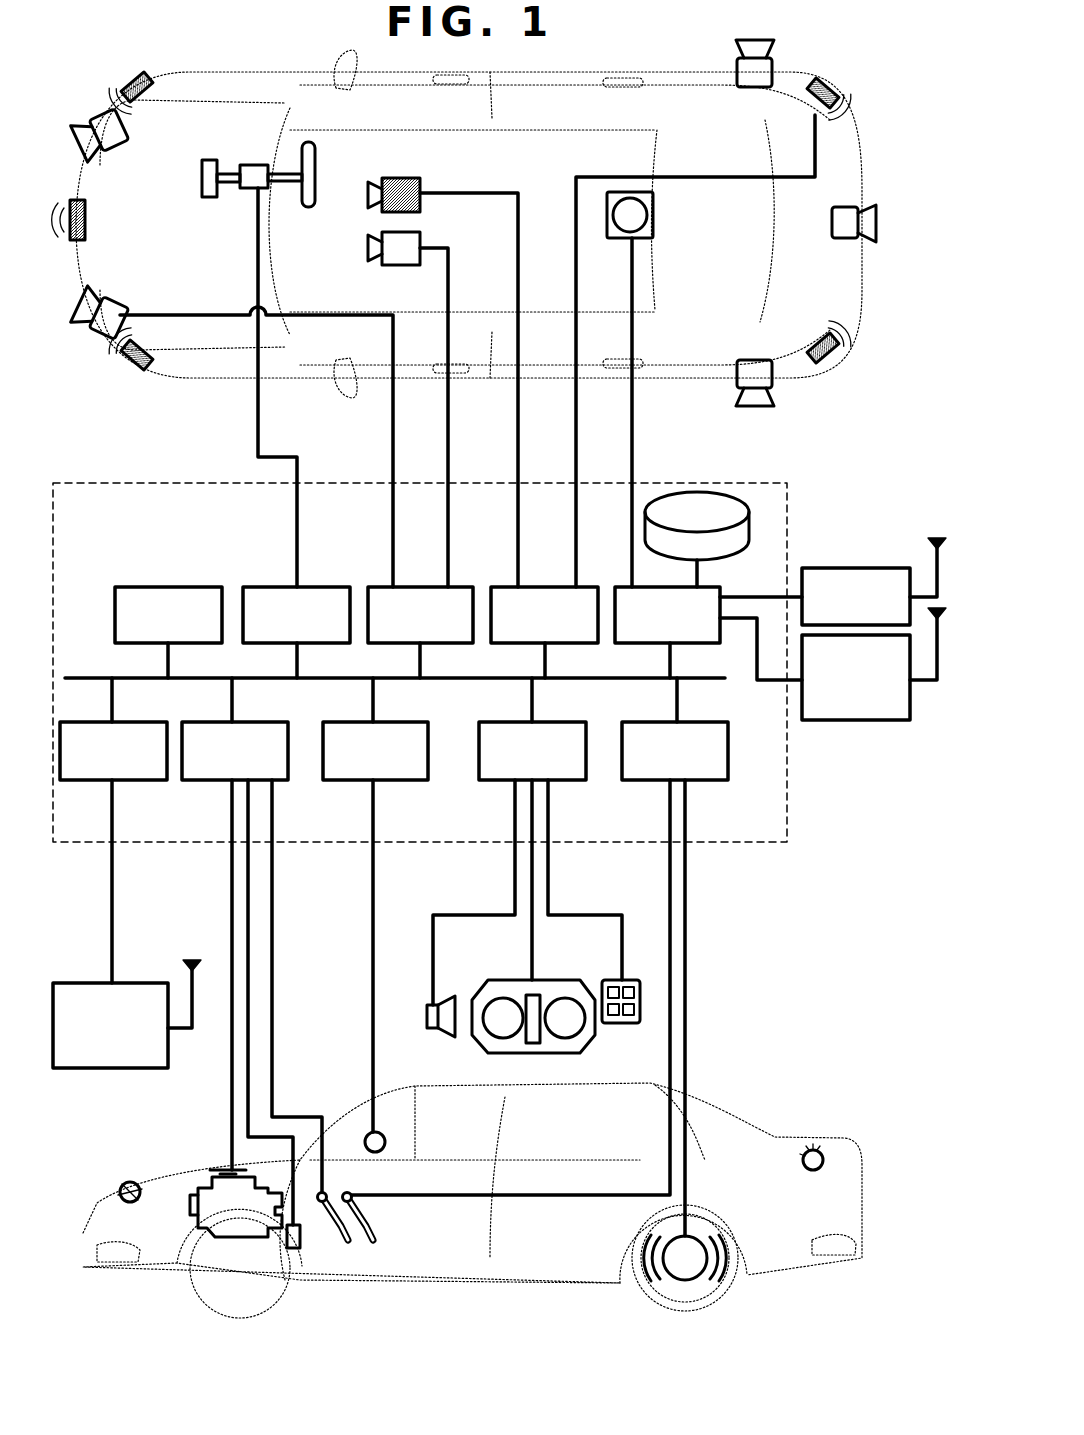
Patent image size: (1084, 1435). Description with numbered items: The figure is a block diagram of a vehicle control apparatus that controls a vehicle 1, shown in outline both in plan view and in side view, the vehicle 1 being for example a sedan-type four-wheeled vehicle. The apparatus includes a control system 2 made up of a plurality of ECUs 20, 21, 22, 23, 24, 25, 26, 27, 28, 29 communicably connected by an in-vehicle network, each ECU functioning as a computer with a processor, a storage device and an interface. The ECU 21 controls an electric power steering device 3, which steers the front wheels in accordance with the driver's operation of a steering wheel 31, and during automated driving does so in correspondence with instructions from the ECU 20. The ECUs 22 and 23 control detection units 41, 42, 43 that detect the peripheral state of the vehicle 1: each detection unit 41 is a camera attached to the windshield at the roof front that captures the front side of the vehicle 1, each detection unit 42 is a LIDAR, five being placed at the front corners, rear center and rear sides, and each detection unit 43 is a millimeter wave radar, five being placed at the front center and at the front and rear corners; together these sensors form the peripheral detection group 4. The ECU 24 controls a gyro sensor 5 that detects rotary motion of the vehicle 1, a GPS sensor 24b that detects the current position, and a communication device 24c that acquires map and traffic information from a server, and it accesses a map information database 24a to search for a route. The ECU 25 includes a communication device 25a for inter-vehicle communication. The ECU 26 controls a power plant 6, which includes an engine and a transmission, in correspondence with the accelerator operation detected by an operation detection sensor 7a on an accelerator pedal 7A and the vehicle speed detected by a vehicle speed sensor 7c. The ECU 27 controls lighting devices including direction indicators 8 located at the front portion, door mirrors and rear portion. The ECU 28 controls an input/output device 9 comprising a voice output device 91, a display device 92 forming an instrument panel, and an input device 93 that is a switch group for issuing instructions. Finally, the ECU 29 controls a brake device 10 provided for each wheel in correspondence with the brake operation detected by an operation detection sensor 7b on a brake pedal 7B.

The vehicle 1 is at (862, 127).
The control system 2 is at (773, 846).
The electric power steering device 3 is at (210, 197).
The steering wheel 31 is at (305, 207).
The external environment sensor group 4 is at (97, 78).
The detection unit (camera) 41 is at (422, 205).
The detection unit (LIDAR) 42 is at (118, 150).
The detection unit (millimeter wave radar) 43 is at (150, 75).
The gyro sensor 5 is at (653, 215).
The power plant 6 is at (208, 1172).
The operation detection sensor 7a is at (326, 1188).
The operation detection sensor 7b is at (352, 1195).
The accelerator pedal 7A is at (354, 1238).
The brake pedal 7B is at (379, 1234).
The vehicle speed sensor 7c is at (294, 1255).
The direction indicator 8 is at (120, 1190).
The input/output device 9 is at (458, 1054).
The voice output device 91 is at (427, 1010).
The display device 92 is at (490, 996).
The input device 93 is at (623, 1023).
The brake device 10 is at (690, 1283).
The ECU 20 is at (200, 585).
The ECU 21 is at (327, 585).
The ECU 22 is at (422, 585).
The ECU 23 is at (547, 584).
The ECU 24 is at (609, 584).
The map information database 24a is at (697, 492).
The GPS sensor 24b is at (870, 568).
The communication device 24c is at (882, 722).
The ECU 25 is at (140, 783).
The communication device 25a is at (118, 1068).
The ECU 26 is at (213, 783).
The ECU 27 is at (405, 783).
The ECU 28 is at (575, 783).
The ECU 29 is at (715, 783).